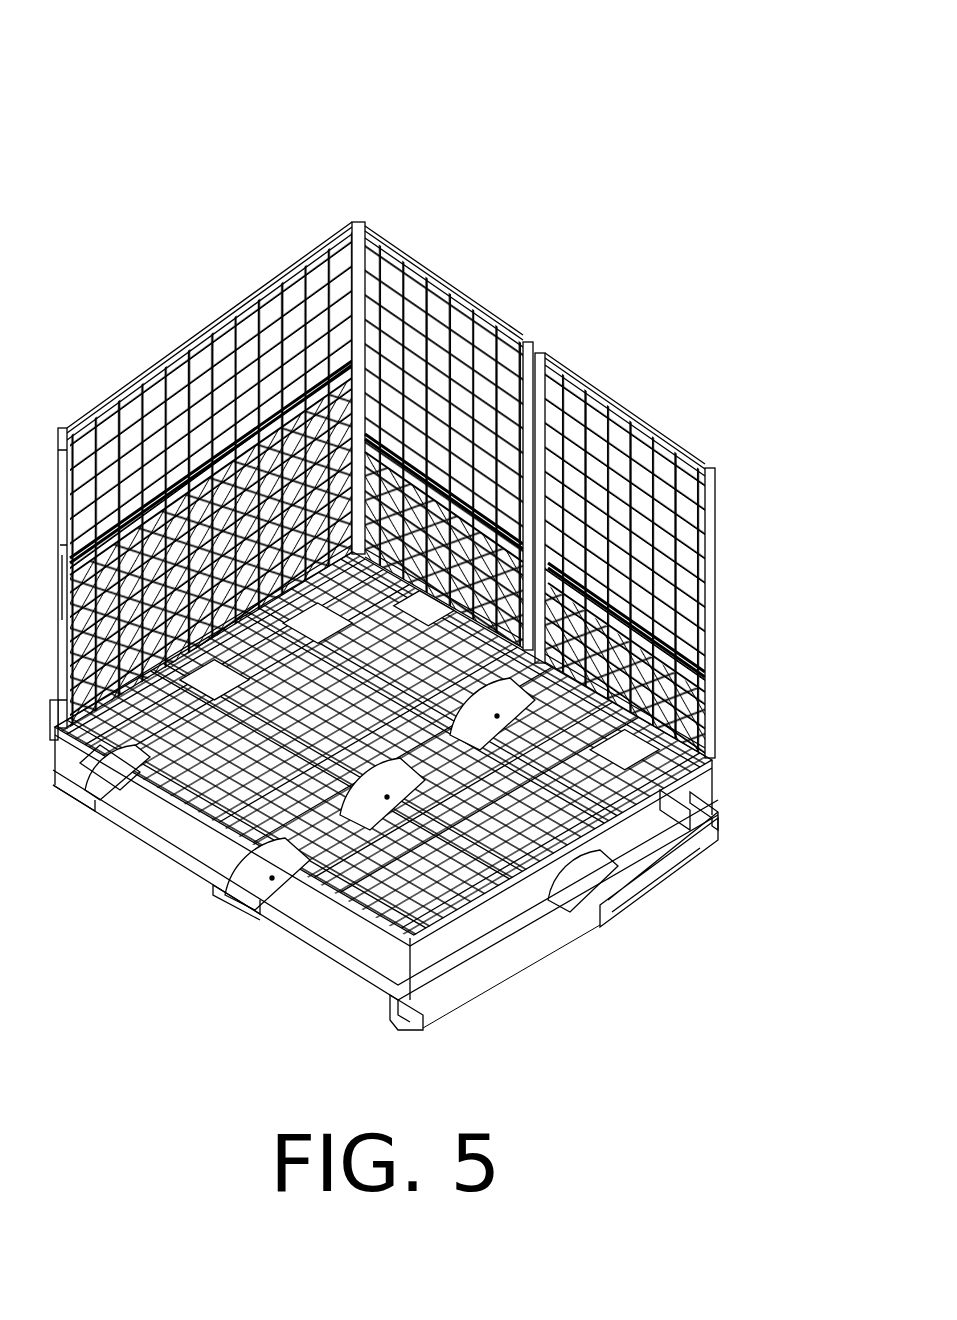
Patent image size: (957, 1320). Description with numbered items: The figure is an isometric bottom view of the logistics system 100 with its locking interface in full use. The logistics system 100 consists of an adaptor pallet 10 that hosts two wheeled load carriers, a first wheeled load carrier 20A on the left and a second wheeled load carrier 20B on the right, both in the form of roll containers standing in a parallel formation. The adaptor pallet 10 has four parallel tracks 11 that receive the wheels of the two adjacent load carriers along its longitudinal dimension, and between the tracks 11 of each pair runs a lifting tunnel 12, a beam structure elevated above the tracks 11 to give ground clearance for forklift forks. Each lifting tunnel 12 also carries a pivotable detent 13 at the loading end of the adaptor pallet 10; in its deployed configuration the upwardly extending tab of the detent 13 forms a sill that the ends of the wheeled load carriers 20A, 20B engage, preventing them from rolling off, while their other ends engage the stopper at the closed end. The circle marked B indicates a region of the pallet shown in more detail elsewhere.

The logistics system 100 is at (173, 300).
The adaptor pallet 10 is at (212, 967).
The track 11 is at (628, 882).
The lifting tunnel 12 is at (365, 957).
The detent 13 is at (705, 800).
The first wheeled load carrier 20A is at (438, 278).
The second wheeled load carrier 20B is at (617, 403).
The detail region B is at (123, 817).